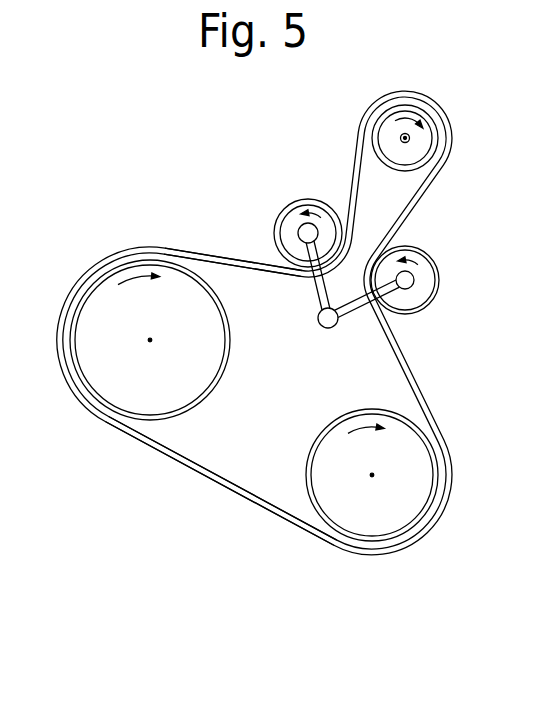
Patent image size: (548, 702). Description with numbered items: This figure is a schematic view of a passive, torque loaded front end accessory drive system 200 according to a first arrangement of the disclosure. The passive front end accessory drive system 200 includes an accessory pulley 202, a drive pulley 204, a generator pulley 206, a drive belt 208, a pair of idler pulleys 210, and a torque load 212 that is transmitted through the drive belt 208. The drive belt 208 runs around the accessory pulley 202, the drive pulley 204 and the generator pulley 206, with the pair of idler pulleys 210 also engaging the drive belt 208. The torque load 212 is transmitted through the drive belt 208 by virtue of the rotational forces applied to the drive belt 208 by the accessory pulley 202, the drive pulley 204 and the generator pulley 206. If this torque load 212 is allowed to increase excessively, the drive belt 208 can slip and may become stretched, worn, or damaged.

The passive front end accessory drive system 200 is at (258, 585).
The accessory pulley 202 is at (380, 522).
The drive pulley 204 is at (116, 392).
The generator pulley 206 is at (388, 146).
The drive belt 208 is at (220, 262).
The pair of idler pulleys 210 is at (288, 228).
The torque load 212 is at (217, 486).